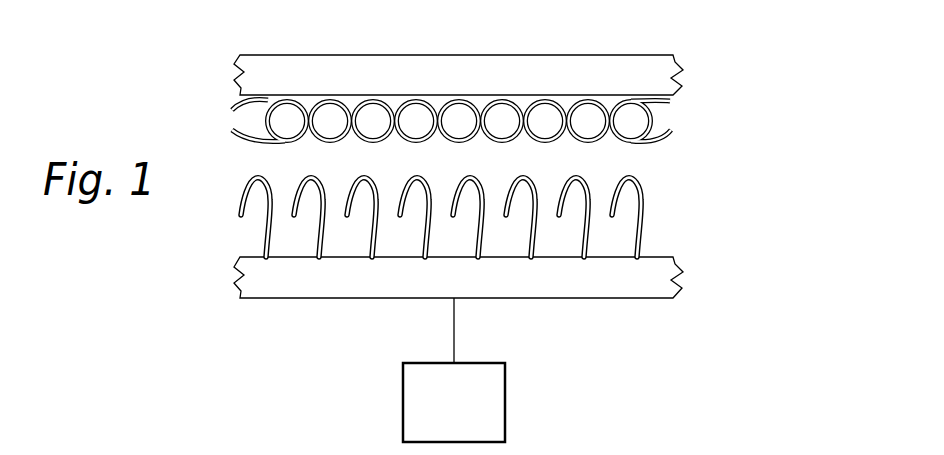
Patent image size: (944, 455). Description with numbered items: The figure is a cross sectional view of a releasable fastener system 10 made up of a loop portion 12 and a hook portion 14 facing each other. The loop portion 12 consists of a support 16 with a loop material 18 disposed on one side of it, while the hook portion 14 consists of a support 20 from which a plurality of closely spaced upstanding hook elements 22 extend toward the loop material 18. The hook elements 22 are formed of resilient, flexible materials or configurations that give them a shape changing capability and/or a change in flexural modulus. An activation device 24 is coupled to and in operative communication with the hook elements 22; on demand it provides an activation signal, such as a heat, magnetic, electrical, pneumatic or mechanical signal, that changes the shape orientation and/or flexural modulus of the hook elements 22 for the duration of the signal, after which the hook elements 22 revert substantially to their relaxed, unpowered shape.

The releasable fastener system 10 is at (737, 68).
The loop portion 12 is at (200, 98).
The hook portion 14 is at (200, 260).
The support 16 is at (653, 81).
The loop material 18 is at (607, 143).
The support 20 is at (635, 282).
The hook elements 22 is at (650, 204).
The activation device 24 is at (505, 397).